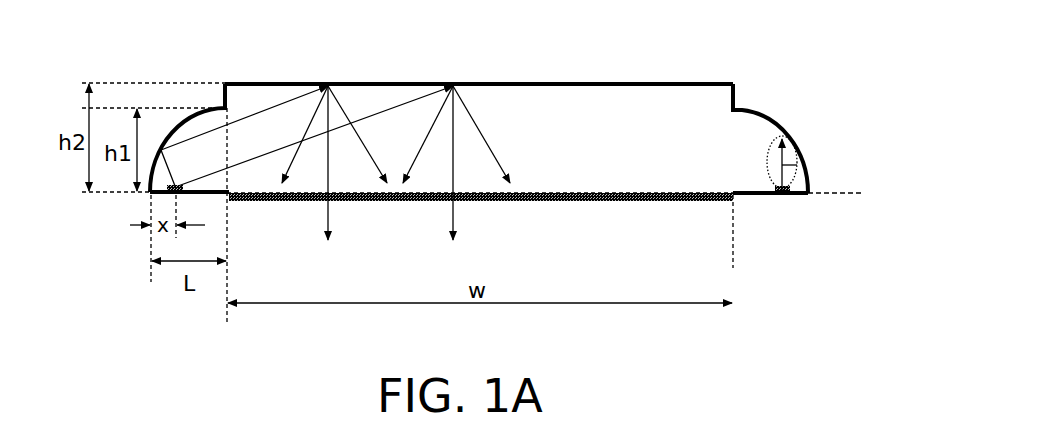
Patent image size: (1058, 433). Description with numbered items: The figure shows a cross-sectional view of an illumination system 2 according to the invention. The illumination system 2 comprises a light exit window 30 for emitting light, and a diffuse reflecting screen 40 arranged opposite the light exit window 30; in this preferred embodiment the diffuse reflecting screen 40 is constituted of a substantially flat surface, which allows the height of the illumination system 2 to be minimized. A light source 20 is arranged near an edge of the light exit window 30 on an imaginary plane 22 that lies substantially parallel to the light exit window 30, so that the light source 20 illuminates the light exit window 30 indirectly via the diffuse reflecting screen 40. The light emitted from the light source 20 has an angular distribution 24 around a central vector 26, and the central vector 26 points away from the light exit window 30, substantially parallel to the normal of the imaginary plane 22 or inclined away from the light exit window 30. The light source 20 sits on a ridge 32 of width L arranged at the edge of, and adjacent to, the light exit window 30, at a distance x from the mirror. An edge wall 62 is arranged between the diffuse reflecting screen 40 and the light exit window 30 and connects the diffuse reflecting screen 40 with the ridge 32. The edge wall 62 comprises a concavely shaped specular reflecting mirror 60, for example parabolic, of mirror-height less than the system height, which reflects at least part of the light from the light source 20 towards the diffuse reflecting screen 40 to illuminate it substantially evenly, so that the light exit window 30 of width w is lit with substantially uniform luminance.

The illumination system 2 is at (738, 33).
The light source 20 is at (785, 196).
The imaginary plane 22 is at (855, 196).
The angular distribution 24 is at (768, 168).
The central vector 26 is at (805, 160).
The light exit window 30 is at (606, 201).
The ridge 32 is at (755, 196).
The diffuse reflecting screen 40 is at (588, 89).
The specular reflecting mirror 60 is at (752, 118).
The edge wall 62 is at (735, 93).